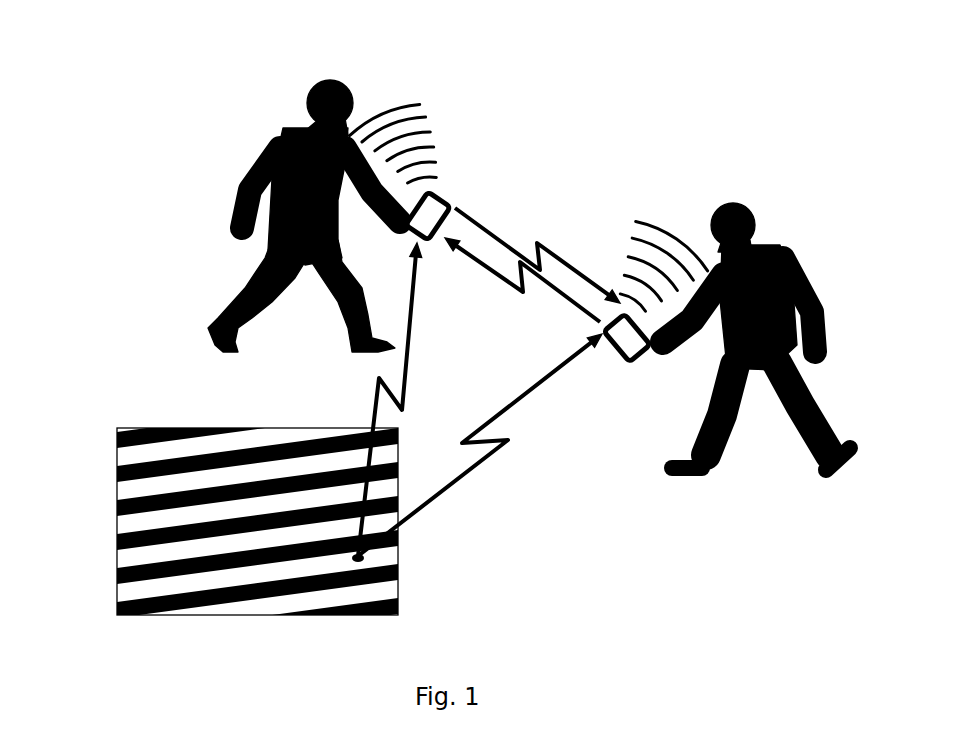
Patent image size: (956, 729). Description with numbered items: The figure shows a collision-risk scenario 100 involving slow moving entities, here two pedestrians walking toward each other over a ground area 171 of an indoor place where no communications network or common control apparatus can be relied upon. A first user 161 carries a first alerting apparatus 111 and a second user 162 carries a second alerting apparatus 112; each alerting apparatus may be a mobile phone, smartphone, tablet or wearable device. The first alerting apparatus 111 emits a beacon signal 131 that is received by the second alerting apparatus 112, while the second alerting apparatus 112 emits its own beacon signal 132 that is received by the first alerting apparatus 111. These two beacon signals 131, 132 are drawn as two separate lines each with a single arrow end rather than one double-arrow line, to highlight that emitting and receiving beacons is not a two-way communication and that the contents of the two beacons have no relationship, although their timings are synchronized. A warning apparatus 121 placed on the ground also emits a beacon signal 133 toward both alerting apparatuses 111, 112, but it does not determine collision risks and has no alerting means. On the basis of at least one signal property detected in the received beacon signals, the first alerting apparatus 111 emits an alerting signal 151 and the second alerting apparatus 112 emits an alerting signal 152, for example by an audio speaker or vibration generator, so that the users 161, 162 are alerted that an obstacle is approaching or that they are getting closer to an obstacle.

The system 100 is at (95, 37).
The first alerting apparatus 111 is at (470, 204).
The second alerting apparatus 112 is at (619, 376).
The warning apparatus 121 is at (437, 579).
The beacon signal 131 is at (537, 254).
The beacon signal 132 is at (522, 297).
The beacon signal of warning apparatus 133 is at (480, 399).
The alerting signal 151 is at (445, 140).
The alerting signal 152 is at (663, 224).
The user 161 is at (302, 216).
The user 162 is at (756, 315).
The image / environment map 171 is at (257, 513).